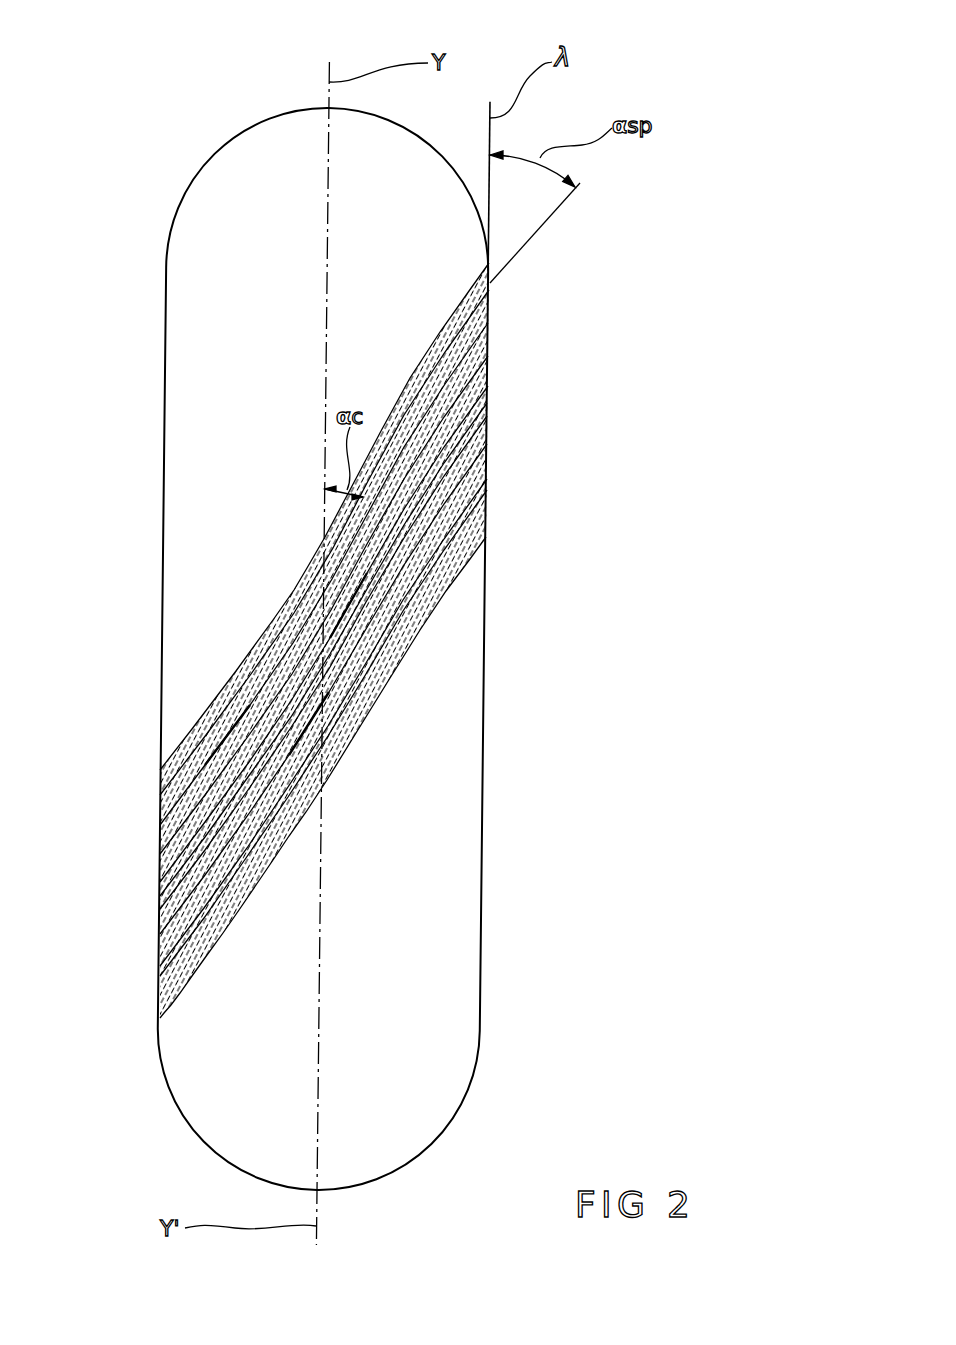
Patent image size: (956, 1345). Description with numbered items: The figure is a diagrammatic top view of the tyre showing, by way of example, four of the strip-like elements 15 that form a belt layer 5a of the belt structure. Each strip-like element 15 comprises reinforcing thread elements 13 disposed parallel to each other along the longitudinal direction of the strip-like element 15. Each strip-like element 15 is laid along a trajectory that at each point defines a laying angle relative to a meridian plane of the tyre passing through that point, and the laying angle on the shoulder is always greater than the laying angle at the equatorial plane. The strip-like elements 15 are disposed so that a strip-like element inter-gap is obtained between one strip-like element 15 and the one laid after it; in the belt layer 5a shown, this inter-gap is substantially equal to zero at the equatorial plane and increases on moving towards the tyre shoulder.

The belt layer 5a is at (408, 378).
The strip-like element 15 is at (487, 433).
The reinforcing thread element 13 is at (435, 588).